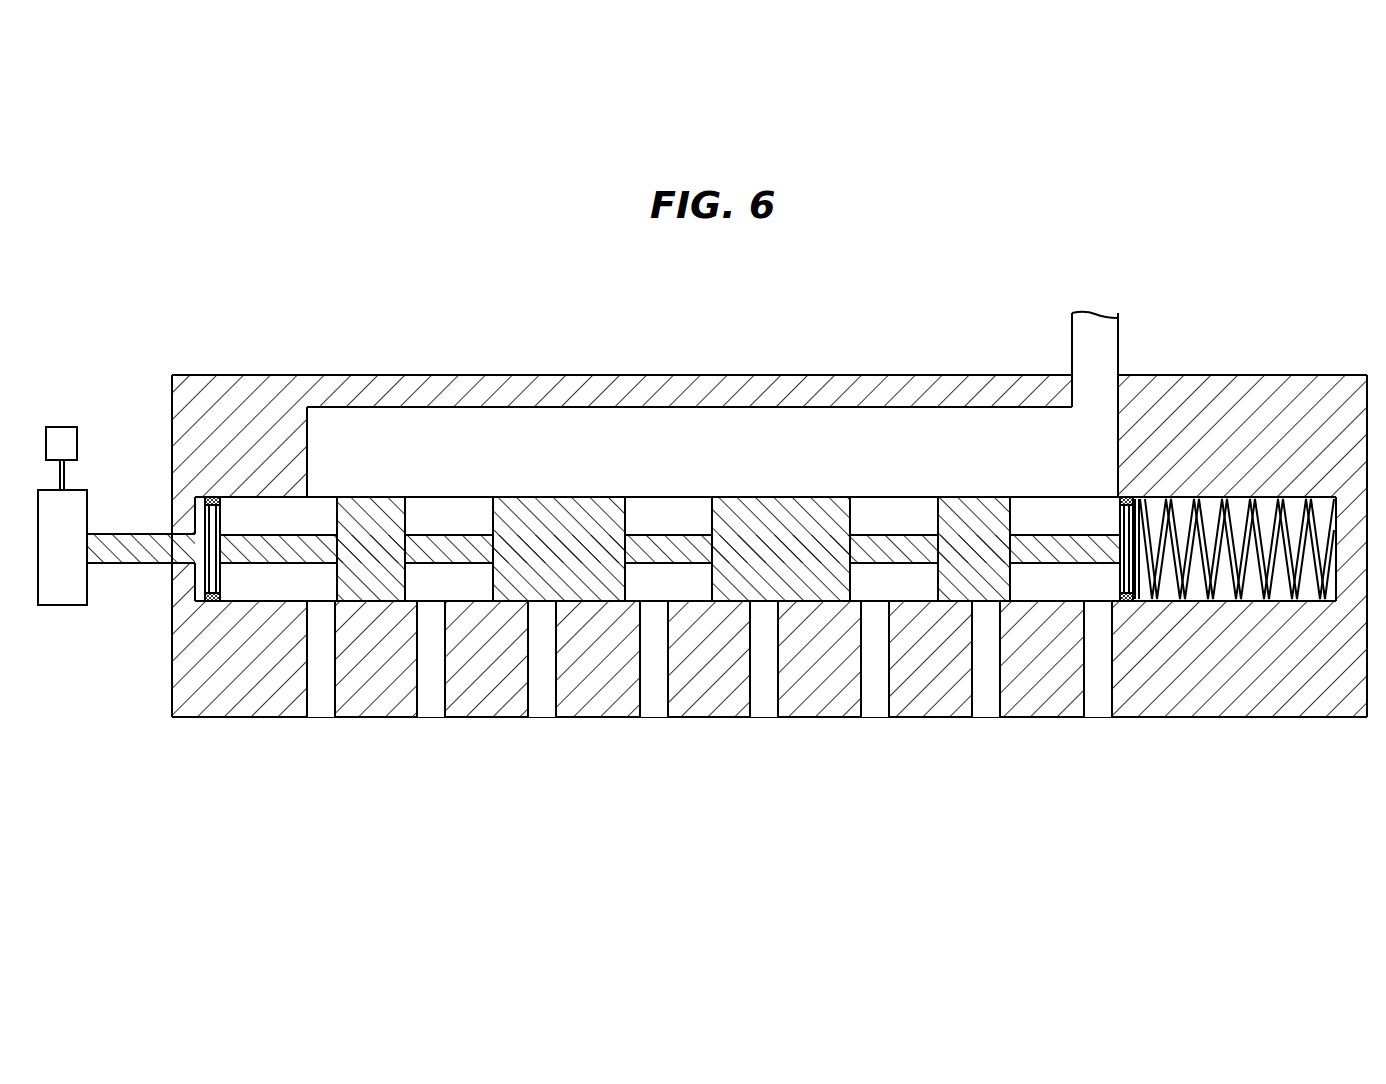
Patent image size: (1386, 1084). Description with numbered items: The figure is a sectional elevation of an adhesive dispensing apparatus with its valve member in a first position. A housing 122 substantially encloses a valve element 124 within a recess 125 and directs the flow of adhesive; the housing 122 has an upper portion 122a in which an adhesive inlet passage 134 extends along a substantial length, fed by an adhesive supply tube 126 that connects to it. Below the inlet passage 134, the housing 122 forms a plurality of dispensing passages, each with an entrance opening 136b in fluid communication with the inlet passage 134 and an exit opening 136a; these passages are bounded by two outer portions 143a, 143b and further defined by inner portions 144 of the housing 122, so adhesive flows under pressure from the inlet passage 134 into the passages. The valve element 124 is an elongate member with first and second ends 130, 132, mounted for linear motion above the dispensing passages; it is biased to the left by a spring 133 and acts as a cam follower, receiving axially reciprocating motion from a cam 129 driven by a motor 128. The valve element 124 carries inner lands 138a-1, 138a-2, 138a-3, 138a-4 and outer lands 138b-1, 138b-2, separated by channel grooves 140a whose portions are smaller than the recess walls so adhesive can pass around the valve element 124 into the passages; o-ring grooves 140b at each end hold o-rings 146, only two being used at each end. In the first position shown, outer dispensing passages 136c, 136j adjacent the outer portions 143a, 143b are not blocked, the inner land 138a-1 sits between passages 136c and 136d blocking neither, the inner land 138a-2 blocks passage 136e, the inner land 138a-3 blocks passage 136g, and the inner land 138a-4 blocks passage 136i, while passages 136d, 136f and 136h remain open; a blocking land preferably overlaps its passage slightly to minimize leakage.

The housing 122 is at (237, 383).
The upper portion of the housing 122a is at (322, 390).
The valve element 124 is at (141, 533).
The recess 125 is at (282, 513).
The adhesive supply conduit or tube 126 is at (1100, 330).
The motor 128 is at (60, 427).
The cam 129 is at (62, 605).
The first end of the valve element 130 is at (173, 612).
The second end of the valve element 132 is at (1150, 513).
The spring 133 is at (1248, 508).
The adhesive inlet passage 134 is at (739, 427).
The exit opening 136a is at (316, 718).
The entrance opening 136b is at (307, 620).
The outer dispensing passage 136c is at (322, 707).
The dispensing passage 136d is at (430, 708).
The dispensing passage 136e is at (545, 708).
The dispensing passage 136f is at (657, 708).
The dispensing passage 136g is at (765, 708).
The dispensing passage 136h is at (877, 708).
The dispensing passage 136i is at (985, 708).
The outer dispensing passage 136j is at (1094, 708).
The inner land 138a-1 is at (390, 507).
The inner land 138a-2 is at (542, 503).
The inner land 138a-3 is at (777, 507).
The inner land 138a-4 is at (953, 510).
The outer land 138b-1 is at (208, 602).
The outer land 138b-2 is at (1134, 600).
The channel groove 140a is at (320, 497).
The o-ring groove 140b is at (211, 498).
The outer portion of the housing 143a is at (198, 712).
The outer portion of the housing 143b is at (1322, 700).
The inner portion of the housing 144 is at (378, 706).
The o-ring 146 is at (211, 499).